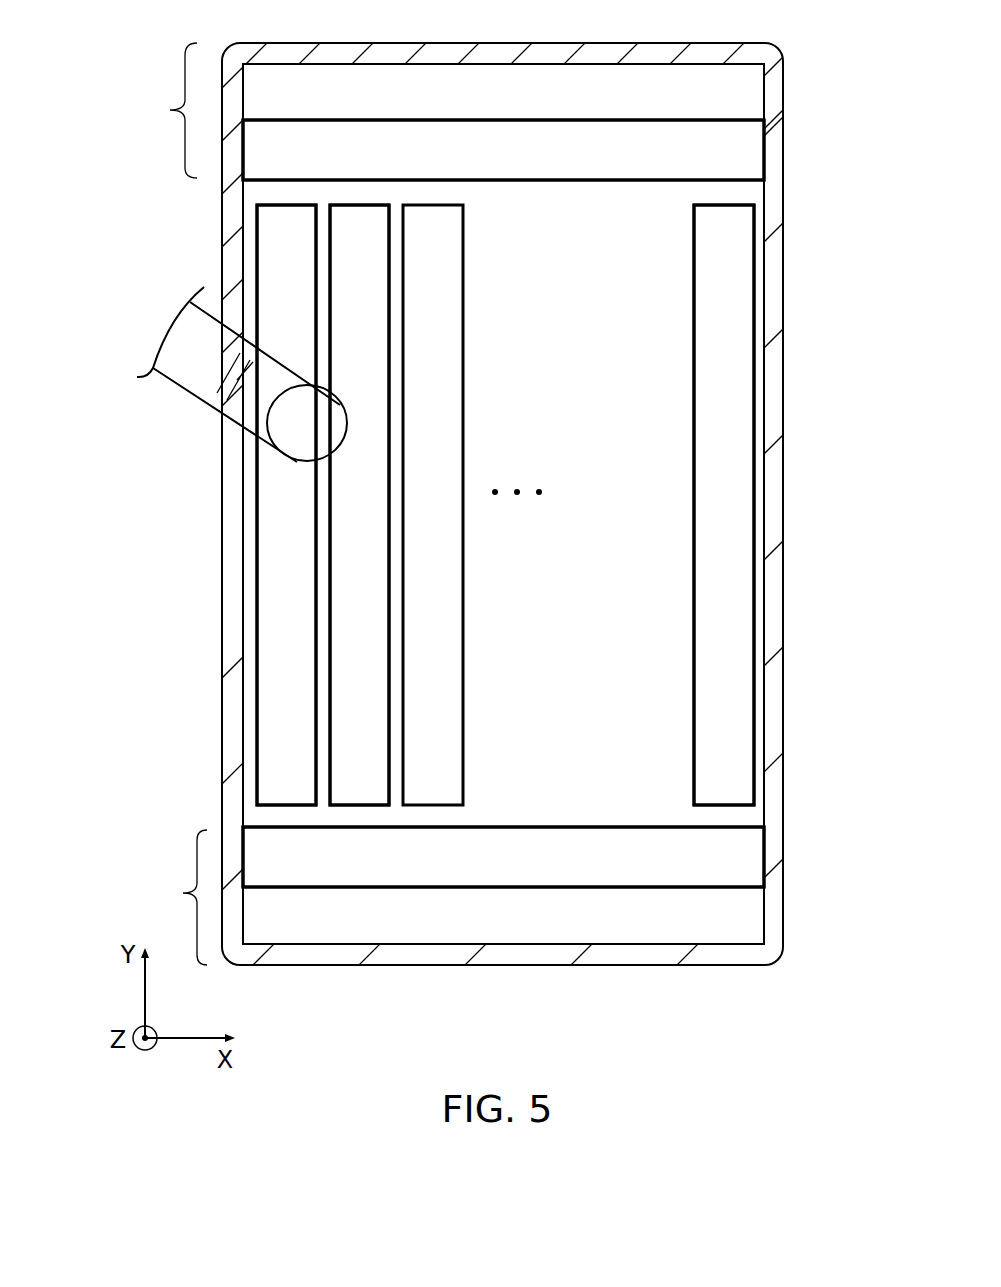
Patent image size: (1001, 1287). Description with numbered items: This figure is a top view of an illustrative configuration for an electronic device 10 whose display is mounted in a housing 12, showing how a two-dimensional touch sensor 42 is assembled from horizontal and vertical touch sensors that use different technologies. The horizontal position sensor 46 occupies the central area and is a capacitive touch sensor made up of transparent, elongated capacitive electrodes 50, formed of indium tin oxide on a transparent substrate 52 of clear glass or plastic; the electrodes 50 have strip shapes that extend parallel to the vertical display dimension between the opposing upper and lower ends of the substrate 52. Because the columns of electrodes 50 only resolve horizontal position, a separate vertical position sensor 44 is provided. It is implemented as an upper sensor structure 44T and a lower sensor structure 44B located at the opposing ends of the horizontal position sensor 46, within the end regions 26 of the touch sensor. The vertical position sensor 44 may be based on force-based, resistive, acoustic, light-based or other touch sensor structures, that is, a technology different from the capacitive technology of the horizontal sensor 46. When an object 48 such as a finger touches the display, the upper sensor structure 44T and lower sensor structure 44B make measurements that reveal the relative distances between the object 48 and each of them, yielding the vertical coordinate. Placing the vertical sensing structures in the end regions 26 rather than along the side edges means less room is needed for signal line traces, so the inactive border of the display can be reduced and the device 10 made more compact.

The electronic device 10 is at (124, 99).
The housing 12 is at (233, 112).
The end regions 26 is at (170, 110).
The touch sensor 42 is at (614, 84).
The vertical position sensor 44 is at (738, 101).
The upper sensor structure 44T is at (265, 162).
The lower sensor structure 44B is at (262, 835).
The horizontal position sensor 46 is at (808, 183).
The object 48 is at (192, 397).
The capacitive touch sensor electrodes 50 is at (347, 585).
The substrate 52 is at (752, 208).